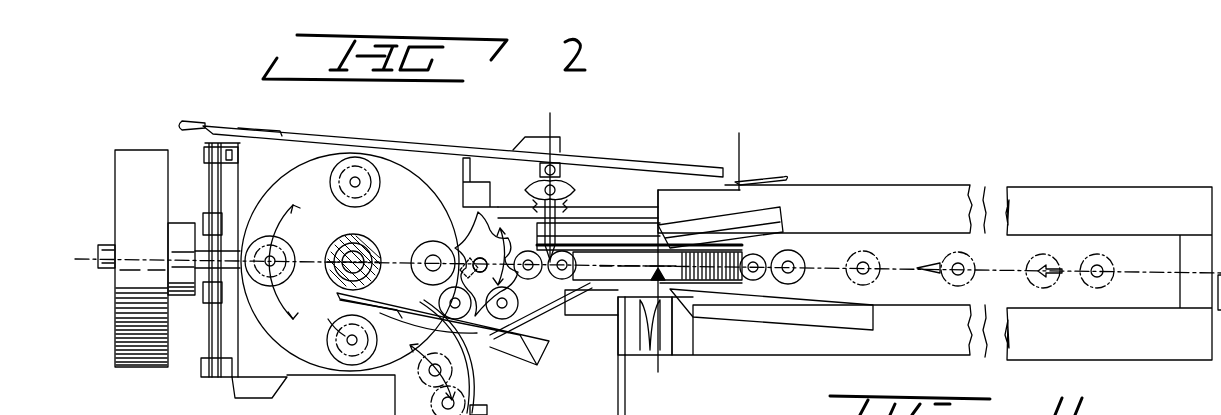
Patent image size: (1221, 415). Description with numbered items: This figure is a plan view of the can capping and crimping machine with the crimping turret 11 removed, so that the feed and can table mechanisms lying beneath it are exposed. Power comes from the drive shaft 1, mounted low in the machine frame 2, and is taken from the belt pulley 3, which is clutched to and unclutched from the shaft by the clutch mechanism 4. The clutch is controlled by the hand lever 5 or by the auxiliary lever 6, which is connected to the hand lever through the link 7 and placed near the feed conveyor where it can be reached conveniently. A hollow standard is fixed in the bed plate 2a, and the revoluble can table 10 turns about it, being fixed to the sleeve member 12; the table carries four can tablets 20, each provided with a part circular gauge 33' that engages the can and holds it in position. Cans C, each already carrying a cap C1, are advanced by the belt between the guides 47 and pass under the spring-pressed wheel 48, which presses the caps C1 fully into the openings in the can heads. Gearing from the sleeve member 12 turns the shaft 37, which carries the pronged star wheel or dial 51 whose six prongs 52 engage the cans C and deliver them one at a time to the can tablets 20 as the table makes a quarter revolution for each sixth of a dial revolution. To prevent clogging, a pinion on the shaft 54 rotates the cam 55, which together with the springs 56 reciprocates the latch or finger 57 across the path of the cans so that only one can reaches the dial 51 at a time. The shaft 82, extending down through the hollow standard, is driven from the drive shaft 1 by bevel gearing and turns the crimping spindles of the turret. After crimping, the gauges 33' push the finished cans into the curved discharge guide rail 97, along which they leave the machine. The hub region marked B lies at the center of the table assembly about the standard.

The drive shaft 1 is at (96, 257).
The machine frame 2 is at (240, 392).
The bed plate 2a is at (300, 380).
The belt pulley 3 is at (141, 150).
The clutch mechanism 4 is at (653, 237).
The hand lever 5 is at (200, 123).
The auxiliary lever 6 is at (782, 176).
The link 7 is at (431, 149).
The revoluble can table 10 is at (552, 122).
The crimping turret 11 is at (742, 137).
The sleeve member 12 is at (320, 250).
The can tablets 20 is at (425, 245).
The gauge 33' is at (327, 318).
The shaft 37 is at (480, 273).
The guides 47 is at (770, 232).
The wheel 48 is at (708, 254).
The pronged star wheel or dial 51 is at (478, 248).
The prongs 52 is at (474, 245).
The shaft 54 is at (556, 192).
The cam 55 is at (578, 191).
The springs 56 is at (538, 175).
The latch or finger 57 is at (565, 245).
The shaft 82 is at (358, 248).
The curved discharge guide rail 97 is at (468, 405).
The drum hub B is at (340, 245).
The cans C is at (430, 376).
The caps C1 is at (332, 342).